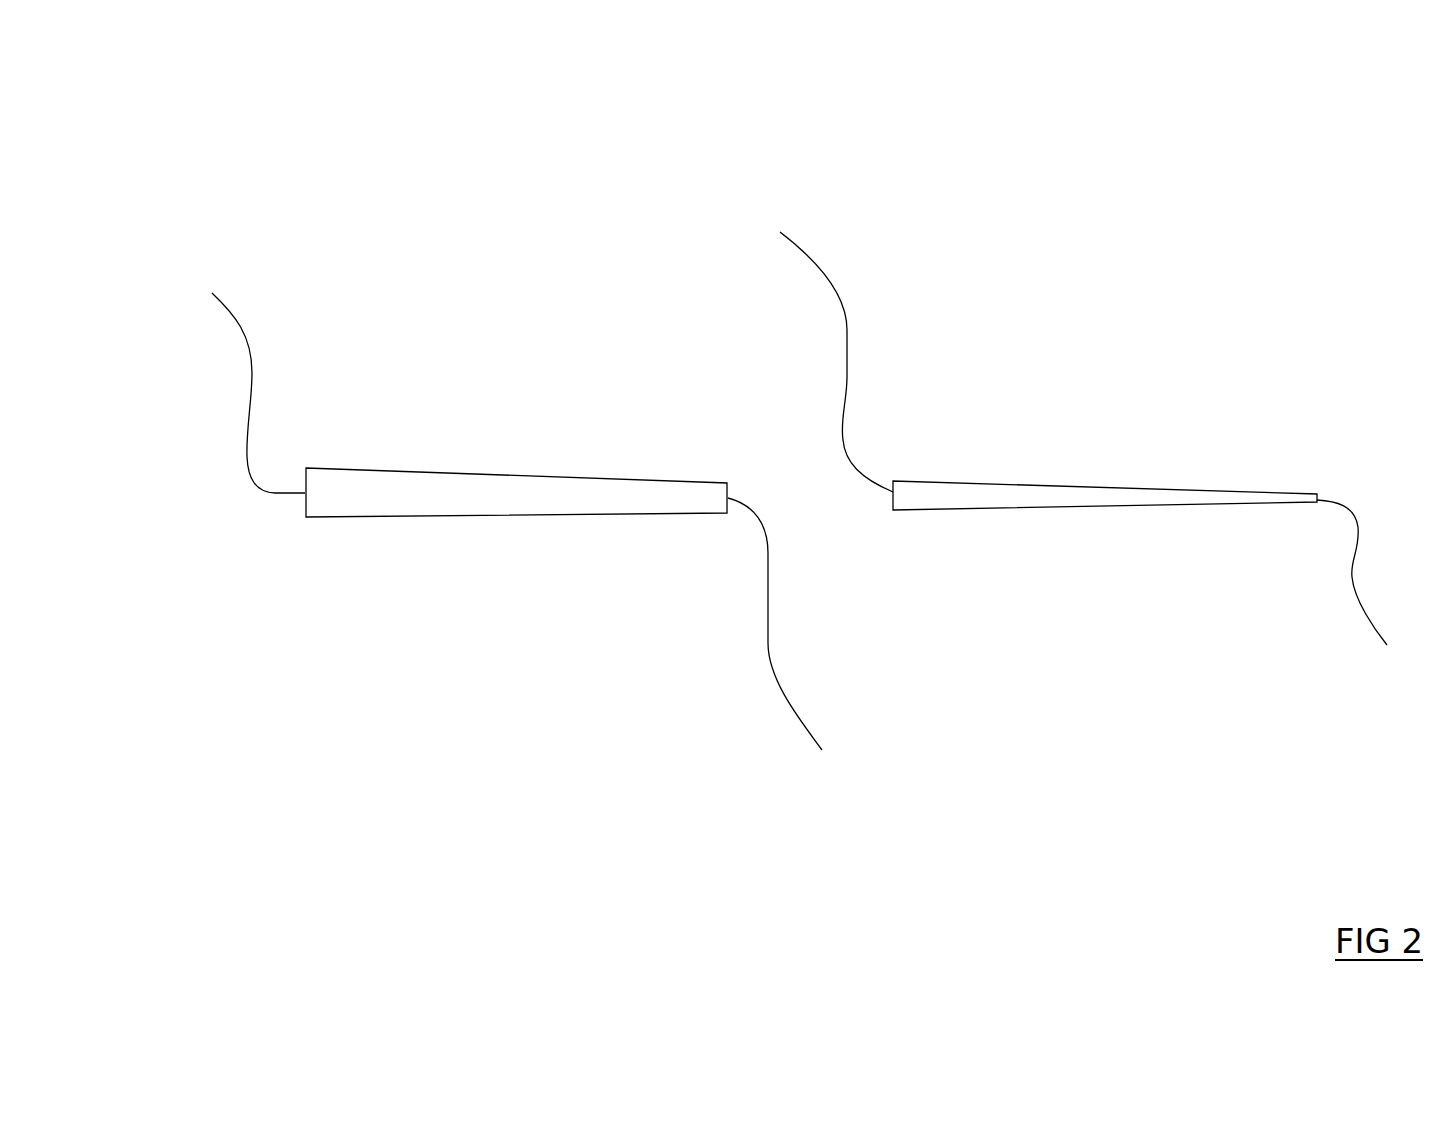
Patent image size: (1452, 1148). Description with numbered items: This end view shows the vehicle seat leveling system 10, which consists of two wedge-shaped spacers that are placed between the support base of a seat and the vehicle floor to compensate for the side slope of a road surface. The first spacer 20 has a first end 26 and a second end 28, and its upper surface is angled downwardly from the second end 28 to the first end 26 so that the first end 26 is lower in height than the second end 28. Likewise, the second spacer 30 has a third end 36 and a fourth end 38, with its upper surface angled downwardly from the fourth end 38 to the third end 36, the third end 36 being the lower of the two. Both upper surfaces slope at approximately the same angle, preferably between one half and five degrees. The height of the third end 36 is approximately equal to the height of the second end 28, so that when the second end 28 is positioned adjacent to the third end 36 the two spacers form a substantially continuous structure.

The vehicle seat leveling system 10 is at (1270, 177).
The first spacer 20 is at (1063, 507).
The first end 26 is at (1372, 593).
The second end 28 is at (818, 345).
The second spacer 30 is at (452, 470).
The third end 36 is at (791, 645).
The fourth end 38 is at (250, 373).